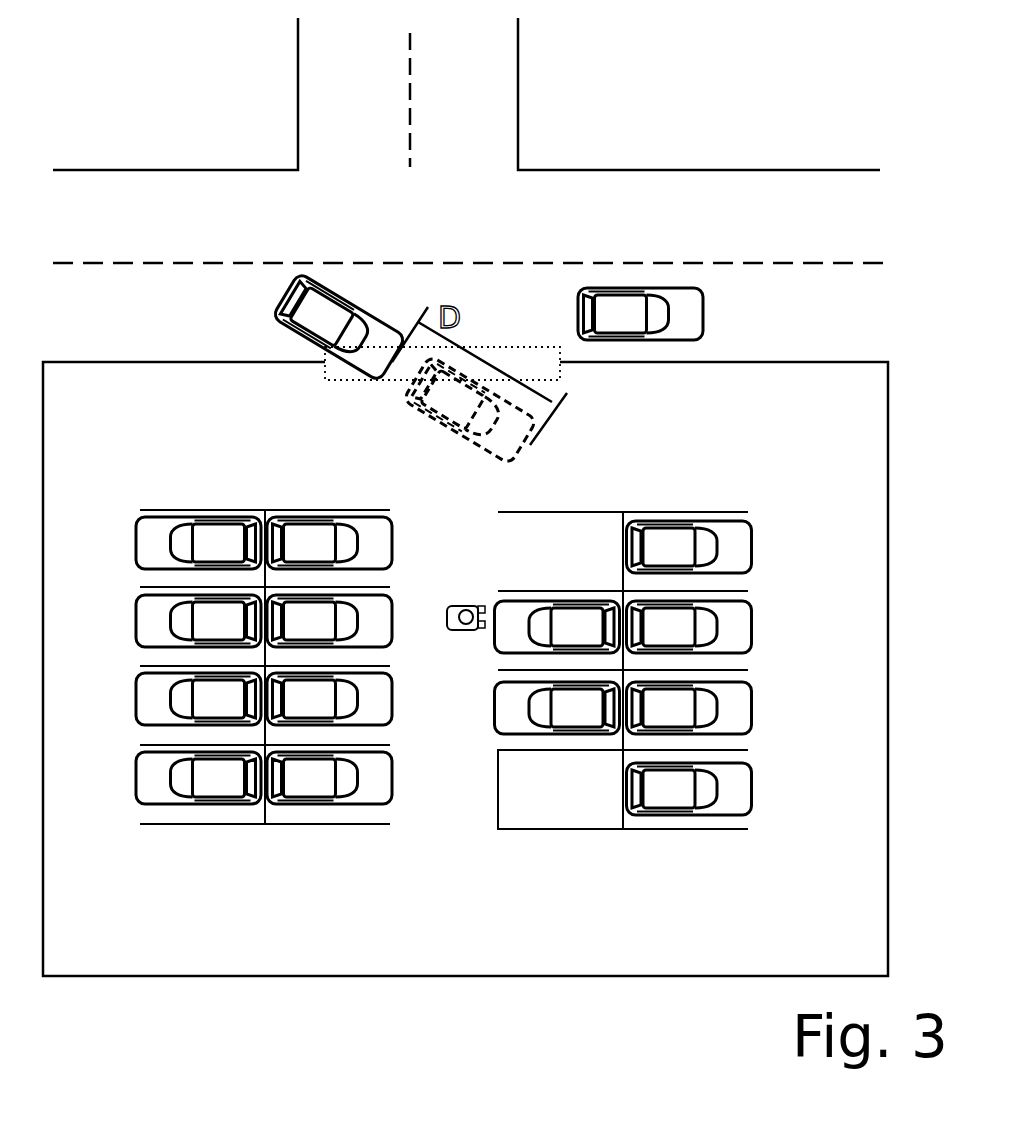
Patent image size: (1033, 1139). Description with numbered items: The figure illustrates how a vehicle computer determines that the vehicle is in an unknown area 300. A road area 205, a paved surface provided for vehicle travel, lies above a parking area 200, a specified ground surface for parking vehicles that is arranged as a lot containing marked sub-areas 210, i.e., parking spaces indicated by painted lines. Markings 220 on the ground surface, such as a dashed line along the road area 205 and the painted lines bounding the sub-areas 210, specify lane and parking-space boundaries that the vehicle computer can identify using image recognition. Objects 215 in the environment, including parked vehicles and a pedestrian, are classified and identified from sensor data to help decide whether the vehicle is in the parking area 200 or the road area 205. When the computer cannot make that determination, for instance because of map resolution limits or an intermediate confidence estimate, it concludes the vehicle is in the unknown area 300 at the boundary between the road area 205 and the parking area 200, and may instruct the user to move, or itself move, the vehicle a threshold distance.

The parking area 200 is at (298, 978).
The road area 205 is at (874, 127).
The sub-area 210 is at (603, 818).
The object 215 is at (798, 490).
The marking 220 is at (275, 220).
The unknown area 300 is at (333, 381).